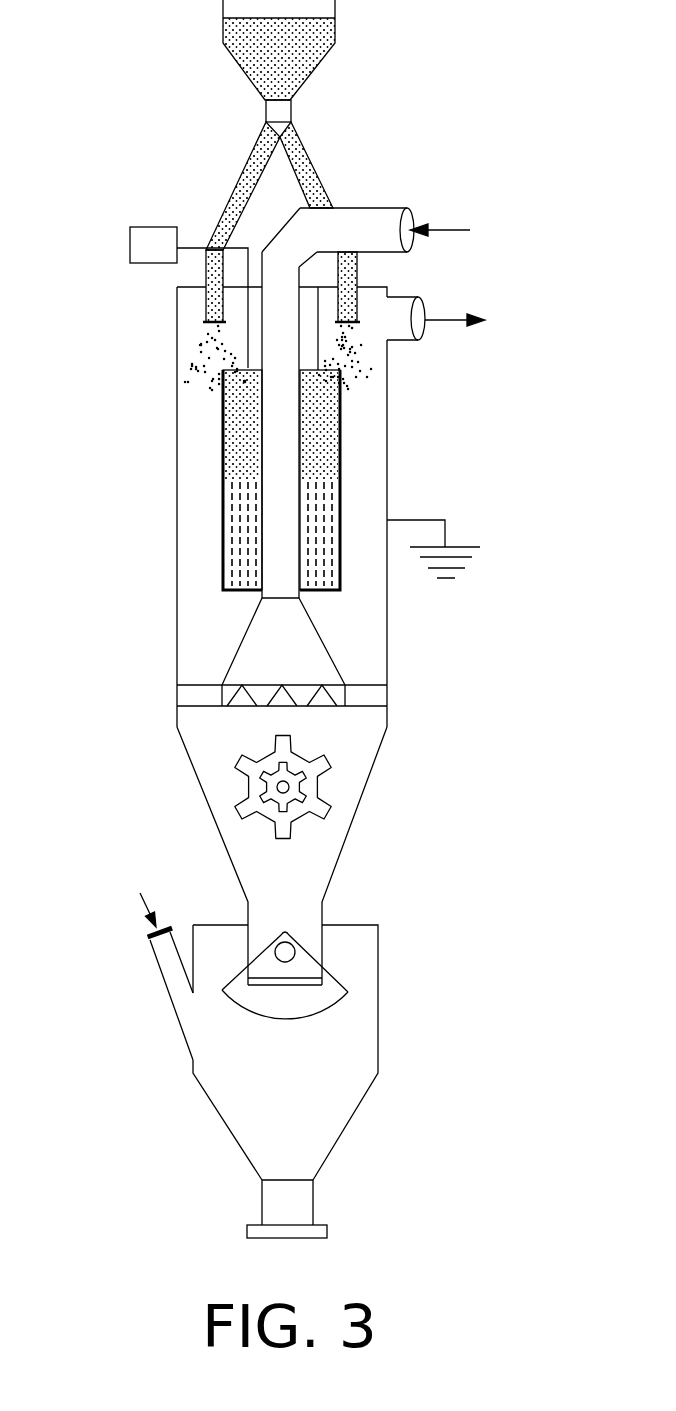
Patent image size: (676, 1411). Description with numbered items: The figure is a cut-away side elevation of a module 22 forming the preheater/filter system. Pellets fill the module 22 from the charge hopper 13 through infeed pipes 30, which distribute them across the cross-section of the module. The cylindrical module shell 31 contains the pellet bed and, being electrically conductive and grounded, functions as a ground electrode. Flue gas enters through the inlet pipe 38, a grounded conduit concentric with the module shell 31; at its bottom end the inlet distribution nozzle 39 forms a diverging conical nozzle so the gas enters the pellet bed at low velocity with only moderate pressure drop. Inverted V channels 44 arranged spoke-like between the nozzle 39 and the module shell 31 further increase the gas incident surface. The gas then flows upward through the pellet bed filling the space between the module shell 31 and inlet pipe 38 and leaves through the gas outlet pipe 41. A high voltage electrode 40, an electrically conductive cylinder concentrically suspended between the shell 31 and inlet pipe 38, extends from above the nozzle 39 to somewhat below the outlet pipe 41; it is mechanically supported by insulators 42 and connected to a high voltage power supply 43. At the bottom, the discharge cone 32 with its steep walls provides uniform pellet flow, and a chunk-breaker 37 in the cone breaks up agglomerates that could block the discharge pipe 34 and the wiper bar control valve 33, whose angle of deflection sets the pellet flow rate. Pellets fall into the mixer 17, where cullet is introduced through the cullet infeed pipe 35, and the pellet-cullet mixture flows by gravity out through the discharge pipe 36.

The charge hopper 13 is at (298, 53).
The module 22 is at (455, 108).
The infeed pipes 30 is at (237, 195).
The high voltage power supply 43 is at (143, 250).
The insulators 42 is at (247, 315).
The gas outlet pipe 41 is at (410, 297).
The module shell 31 is at (177, 528).
The inlet pipe 38 is at (282, 440).
The high voltage electrode 40 is at (342, 472).
The inlet distribution nozzle 39 is at (323, 655).
The inverted V channels 44 is at (387, 683).
The chunk-breaker 37 is at (278, 785).
The discharge cone 32 is at (222, 833).
The discharge pipe 34 is at (247, 922).
The wiper bar control valve 33 is at (240, 978).
The cullet infeed pipe 35 is at (172, 997).
The mixer 17 is at (208, 1102).
The discharge pipe 36 is at (262, 1213).